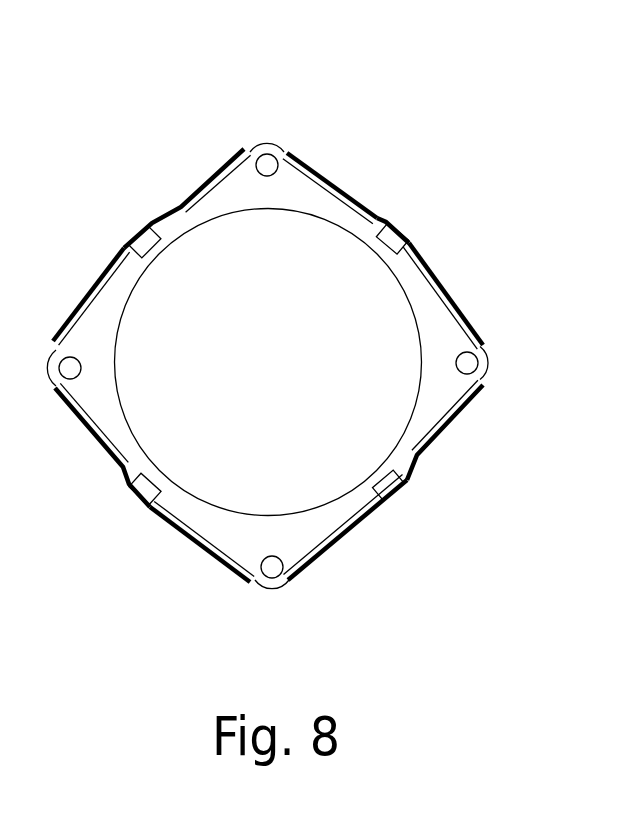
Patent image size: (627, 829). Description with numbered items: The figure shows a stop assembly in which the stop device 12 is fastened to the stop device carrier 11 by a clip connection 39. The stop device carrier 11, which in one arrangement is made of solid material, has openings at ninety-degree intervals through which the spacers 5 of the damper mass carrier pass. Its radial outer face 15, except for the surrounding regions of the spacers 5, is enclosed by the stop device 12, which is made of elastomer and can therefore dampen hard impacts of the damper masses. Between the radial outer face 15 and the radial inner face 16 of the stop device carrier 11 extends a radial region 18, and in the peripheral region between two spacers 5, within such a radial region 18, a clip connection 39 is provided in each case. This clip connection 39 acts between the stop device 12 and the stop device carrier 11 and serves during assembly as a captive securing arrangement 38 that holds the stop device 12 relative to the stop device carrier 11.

The spacer 5 is at (267, 163).
The stop device carrier 11 is at (328, 205).
The stop device 12 is at (303, 157).
The radial outer face 15 is at (450, 300).
The radial inner face 16 is at (390, 278).
The radial region 18 is at (372, 233).
The captive securing arrangement 38 is at (400, 240).
The clip connection 39 is at (390, 233).